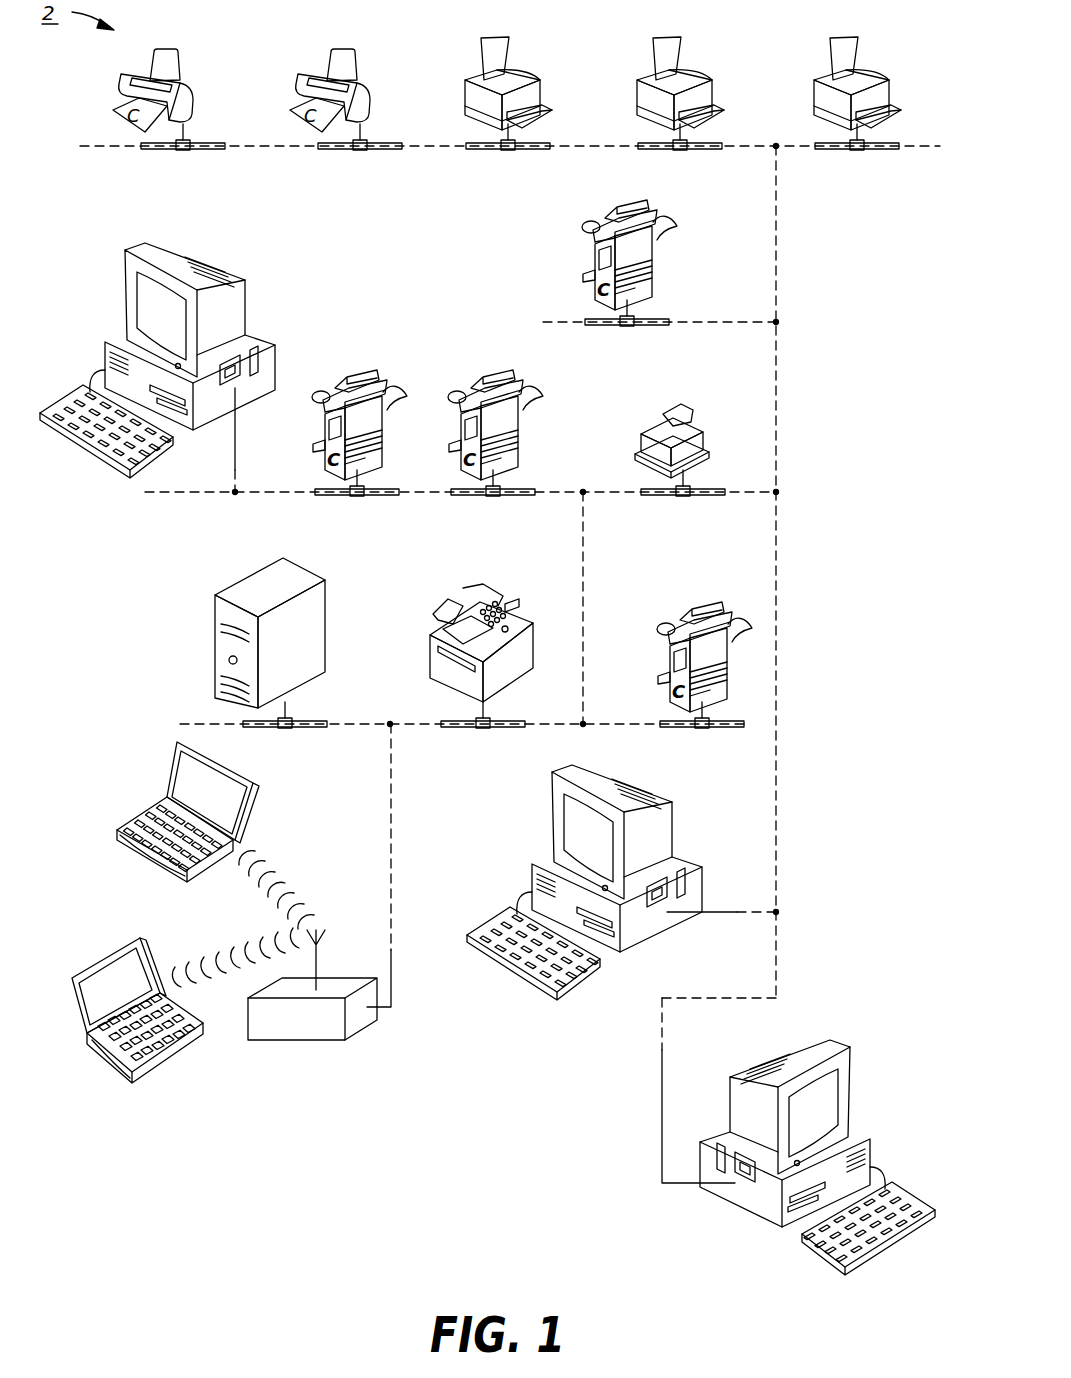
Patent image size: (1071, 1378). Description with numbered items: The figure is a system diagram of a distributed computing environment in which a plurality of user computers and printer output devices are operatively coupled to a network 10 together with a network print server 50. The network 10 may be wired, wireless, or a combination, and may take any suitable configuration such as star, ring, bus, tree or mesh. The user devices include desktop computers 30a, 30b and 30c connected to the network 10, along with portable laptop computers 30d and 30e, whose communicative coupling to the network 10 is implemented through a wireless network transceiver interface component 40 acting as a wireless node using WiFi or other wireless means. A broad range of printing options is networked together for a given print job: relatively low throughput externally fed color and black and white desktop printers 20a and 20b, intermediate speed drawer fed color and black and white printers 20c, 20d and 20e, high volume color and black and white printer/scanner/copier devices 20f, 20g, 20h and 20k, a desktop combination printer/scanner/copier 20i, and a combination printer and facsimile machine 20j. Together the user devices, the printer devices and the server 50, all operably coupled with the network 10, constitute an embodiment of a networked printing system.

The network 10 is at (772, 198).
The externally fed color desktop printer 20a is at (190, 84).
The externally fed black and white desktop printer 20b is at (294, 100).
The drawer fed color and black and white printer 20c is at (466, 114).
The drawer fed color and black and white printer 20d is at (638, 94).
The drawer fed color and black and white printer 20e is at (815, 94).
The high volume printer/scanner/copier device 20f is at (596, 295).
The high volume printer/scanner/copier device 20g is at (320, 462).
The high volume printer/scanner/copier device 20h is at (466, 384).
The desktop combination printer/scanner/copier 20i is at (636, 454).
The combination printer and facsimile machine 20j is at (428, 653).
The high volume printer/scanner/copier device 20k is at (670, 697).
The desktop computer 30a is at (245, 298).
The desktop computer 30b is at (676, 835).
The desktop computer 30c is at (874, 1146).
The laptop computer 30d is at (167, 787).
The laptop computer 30e is at (160, 1058).
The wireless network transceiver interface component 40 is at (301, 1041).
The print server 50 is at (216, 646).